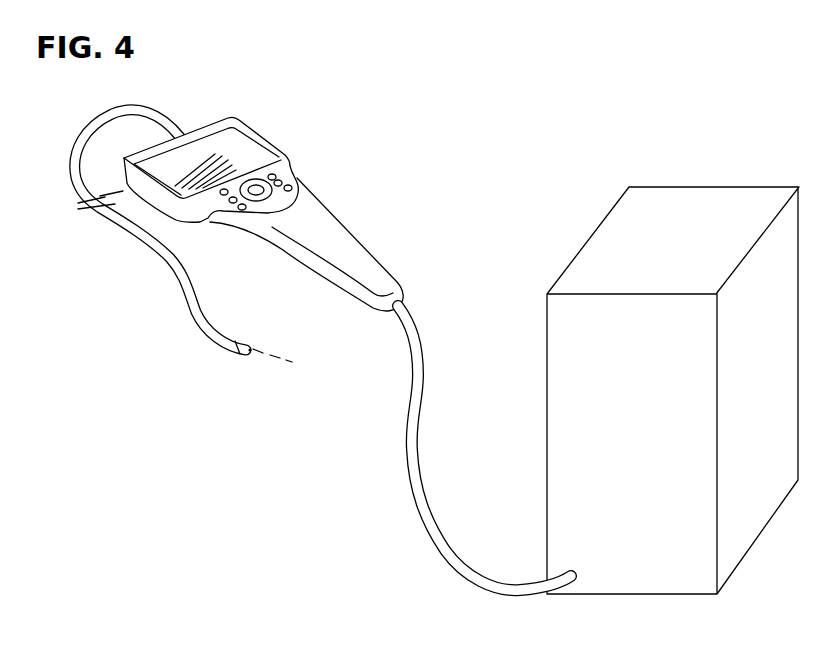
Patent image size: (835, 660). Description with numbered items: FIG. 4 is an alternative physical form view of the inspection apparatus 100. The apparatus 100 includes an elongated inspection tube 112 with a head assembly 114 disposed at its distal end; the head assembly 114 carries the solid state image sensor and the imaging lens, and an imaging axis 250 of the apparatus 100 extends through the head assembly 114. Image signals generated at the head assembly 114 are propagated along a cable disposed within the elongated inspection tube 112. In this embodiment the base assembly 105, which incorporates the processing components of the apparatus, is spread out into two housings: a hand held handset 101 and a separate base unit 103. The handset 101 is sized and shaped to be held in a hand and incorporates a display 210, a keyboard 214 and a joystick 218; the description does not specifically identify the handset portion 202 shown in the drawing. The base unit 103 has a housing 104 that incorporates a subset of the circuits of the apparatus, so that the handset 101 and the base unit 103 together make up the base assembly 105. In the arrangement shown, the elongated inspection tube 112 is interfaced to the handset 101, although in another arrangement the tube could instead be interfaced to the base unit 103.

The inspection apparatus 100 is at (517, 160).
The handset 101 is at (290, 260).
The base unit 103 is at (667, 178).
The housing 104 is at (765, 375).
The base assembly 105 is at (533, 342).
The elongated inspection tube 112 is at (120, 222).
The head assembly 114 is at (241, 354).
The handle 202 is at (333, 244).
The display 210 is at (238, 153).
The keyboard 214 is at (210, 216).
The joystick 218 is at (279, 184).
The imaging axis 250 is at (303, 361).